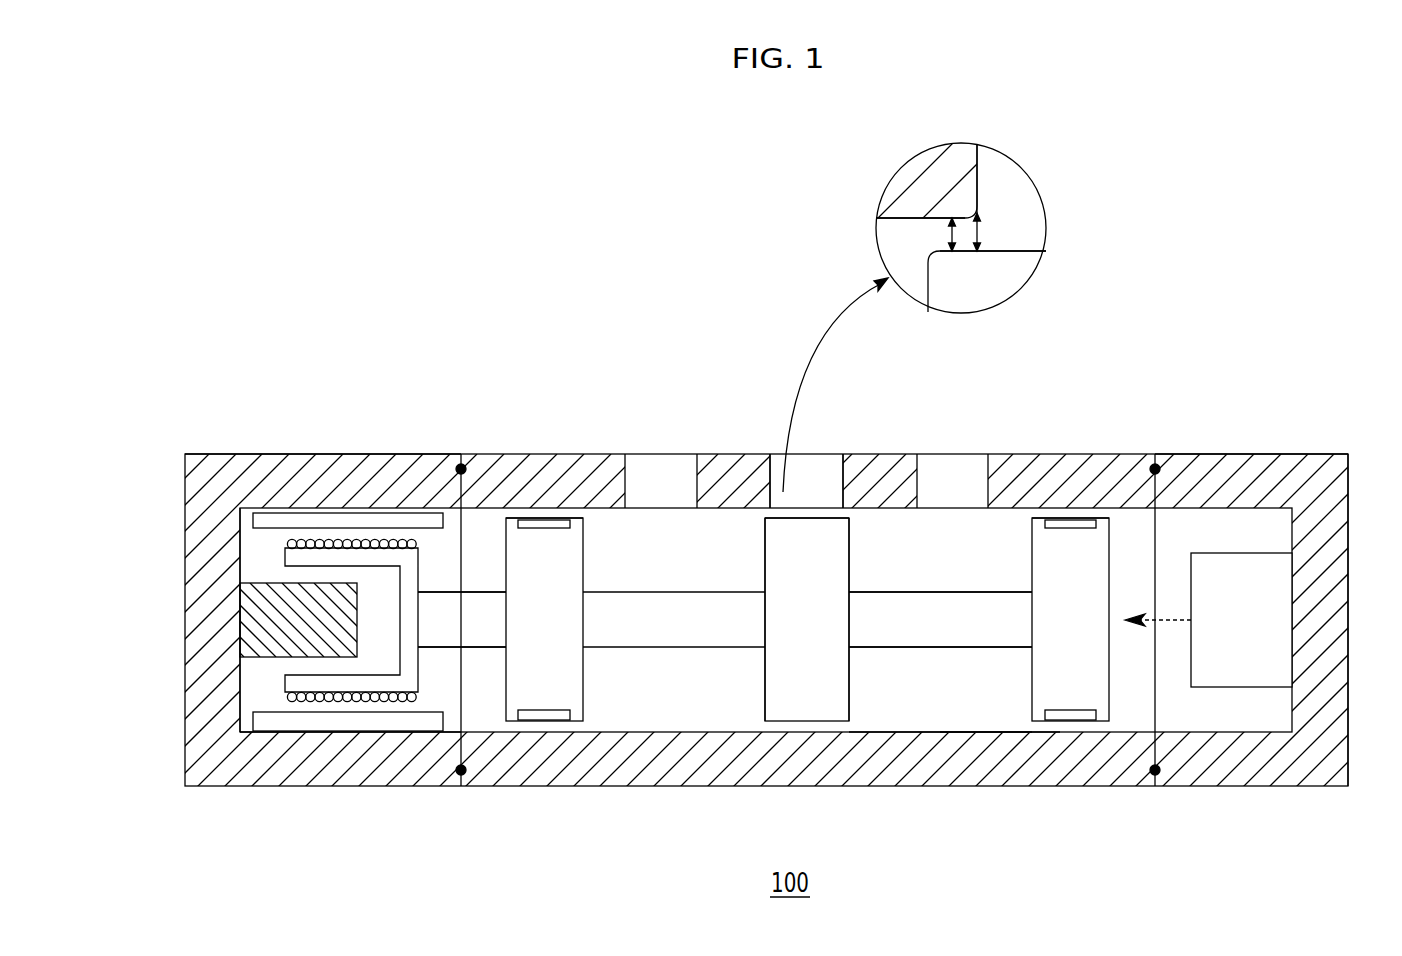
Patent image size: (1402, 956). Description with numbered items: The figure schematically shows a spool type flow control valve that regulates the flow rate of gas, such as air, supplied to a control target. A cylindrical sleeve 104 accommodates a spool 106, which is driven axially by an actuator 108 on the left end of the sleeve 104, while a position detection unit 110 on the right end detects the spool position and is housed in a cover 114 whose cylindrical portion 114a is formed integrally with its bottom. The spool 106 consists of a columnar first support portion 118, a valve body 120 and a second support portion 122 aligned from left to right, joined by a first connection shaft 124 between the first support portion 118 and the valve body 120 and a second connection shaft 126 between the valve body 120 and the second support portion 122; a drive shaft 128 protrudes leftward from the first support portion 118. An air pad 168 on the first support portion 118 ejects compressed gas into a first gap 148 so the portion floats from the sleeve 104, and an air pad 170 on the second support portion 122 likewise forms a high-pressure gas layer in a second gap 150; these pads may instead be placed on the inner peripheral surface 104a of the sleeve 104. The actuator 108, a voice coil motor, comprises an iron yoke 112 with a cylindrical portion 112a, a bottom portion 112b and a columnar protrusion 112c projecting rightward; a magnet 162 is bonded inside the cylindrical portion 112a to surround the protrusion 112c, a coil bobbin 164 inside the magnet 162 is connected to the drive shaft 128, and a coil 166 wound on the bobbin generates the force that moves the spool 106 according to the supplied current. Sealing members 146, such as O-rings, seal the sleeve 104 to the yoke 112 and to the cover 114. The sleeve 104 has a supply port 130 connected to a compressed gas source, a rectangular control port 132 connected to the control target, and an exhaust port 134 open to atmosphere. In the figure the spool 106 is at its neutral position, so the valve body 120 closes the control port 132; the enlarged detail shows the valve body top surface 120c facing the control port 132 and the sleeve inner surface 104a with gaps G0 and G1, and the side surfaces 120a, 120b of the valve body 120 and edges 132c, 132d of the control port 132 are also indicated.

The sleeve 104 is at (662, 788).
The inner peripheral surface of the sleeve 104a is at (1005, 722).
The spool 106 is at (897, 712).
The actuator 108 is at (448, 810).
The position detection unit 110 is at (1240, 689).
The yoke 112 is at (243, 456).
The cylindrical portion 112a is at (298, 462).
The bottom portion 112b is at (210, 521).
The protrusion 112c is at (258, 620).
The cover 114 is at (1310, 456).
The cylindrical portion 114a is at (1222, 466).
The first support portion 118 is at (584, 668).
The valve body 120 is at (851, 668).
The first side surface of mover 120a is at (764, 567).
The second side surface of mover 120b is at (851, 567).
The top surface of mover 120c is at (822, 517).
The second support portion 122 is at (1110, 698).
The first connection shaft 124 is at (712, 649).
The second connection shaft 126 is at (968, 649).
The drive shaft 128 is at (476, 650).
The supply port 130 is at (668, 466).
The control port 132 is at (822, 466).
The first side surface of core 132c is at (771, 472).
The second side surface of core 132d is at (848, 487).
The exhaust port 134 is at (962, 466).
The sealing member 146 is at (456, 465).
The first gap 148 is at (558, 513).
The second gap 150 is at (1050, 513).
The magnet 162 is at (290, 723).
The coil bobbin 164 is at (374, 683).
The coil 166 is at (392, 538).
The air pad 168 is at (532, 522).
The air pad 170 is at (1077, 522).
The first gap G0 is at (948, 237).
The second gap G1 is at (981, 232).